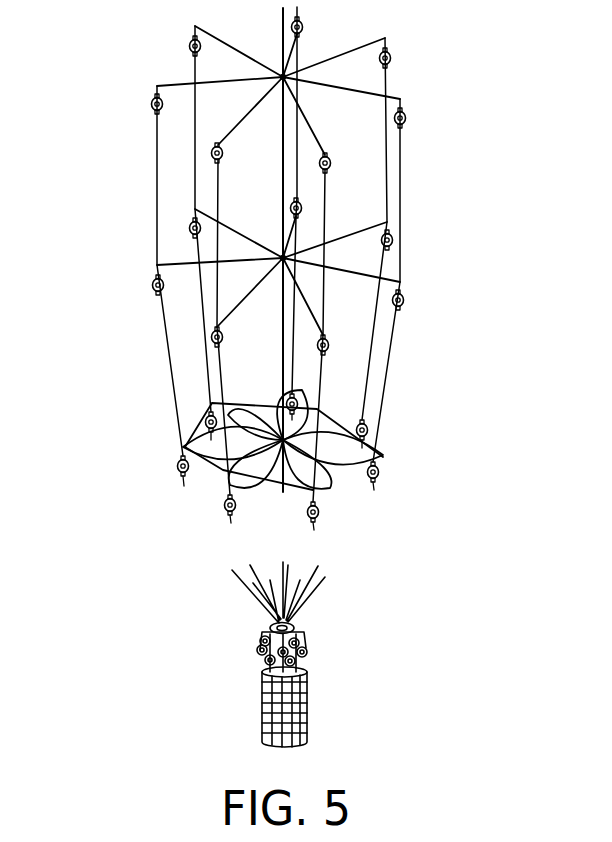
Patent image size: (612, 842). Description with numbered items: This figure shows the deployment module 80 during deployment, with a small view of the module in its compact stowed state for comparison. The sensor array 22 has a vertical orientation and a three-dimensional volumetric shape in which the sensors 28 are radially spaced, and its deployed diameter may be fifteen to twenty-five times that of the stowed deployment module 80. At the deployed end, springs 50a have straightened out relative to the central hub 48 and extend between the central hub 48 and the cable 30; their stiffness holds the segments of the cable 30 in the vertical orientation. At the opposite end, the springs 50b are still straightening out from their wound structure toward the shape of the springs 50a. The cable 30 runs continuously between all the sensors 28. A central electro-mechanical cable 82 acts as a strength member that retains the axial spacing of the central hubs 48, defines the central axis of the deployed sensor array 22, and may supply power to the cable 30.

The sensor array 22 is at (136, 285).
The sensors 28 is at (404, 118).
The cable 30 is at (401, 212).
The central hub 48 is at (329, 77).
The springs 50a is at (368, 91).
The springs 50b is at (378, 473).
The deployment module 80 is at (275, 373).
The central electro-mechanical cable 82 is at (283, 185).